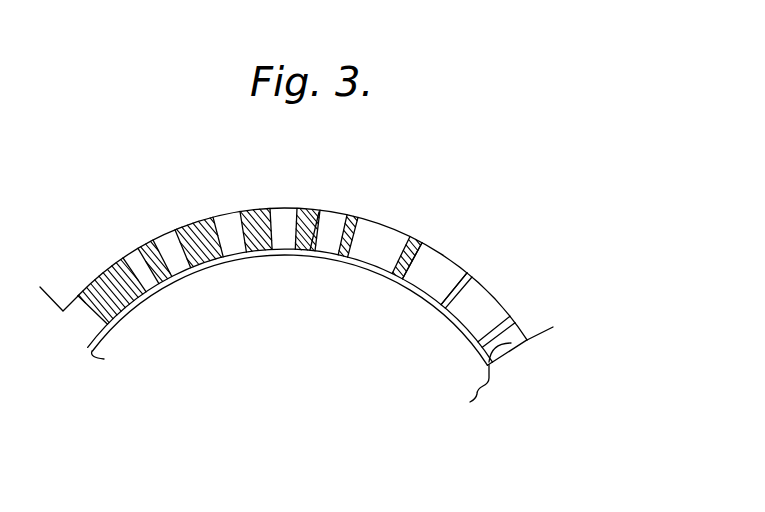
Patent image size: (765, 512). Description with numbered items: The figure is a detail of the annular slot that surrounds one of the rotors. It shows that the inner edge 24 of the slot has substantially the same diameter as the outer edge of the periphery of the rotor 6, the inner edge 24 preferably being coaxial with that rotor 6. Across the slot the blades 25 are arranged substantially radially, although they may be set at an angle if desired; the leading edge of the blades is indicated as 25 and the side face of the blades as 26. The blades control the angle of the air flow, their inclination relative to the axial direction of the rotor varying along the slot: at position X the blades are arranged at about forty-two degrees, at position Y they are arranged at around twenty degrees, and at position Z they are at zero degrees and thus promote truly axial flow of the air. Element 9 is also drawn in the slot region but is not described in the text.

The rotor 6 is at (303, 315).
The spacer block 9 is at (435, 272).
The inner edge 24 is at (505, 352).
The blades 25 is at (306, 208).
The side face of the blades 26 is at (319, 228).
The position X is at (59, 291).
The position Y is at (295, 192).
The position Z is at (540, 318).